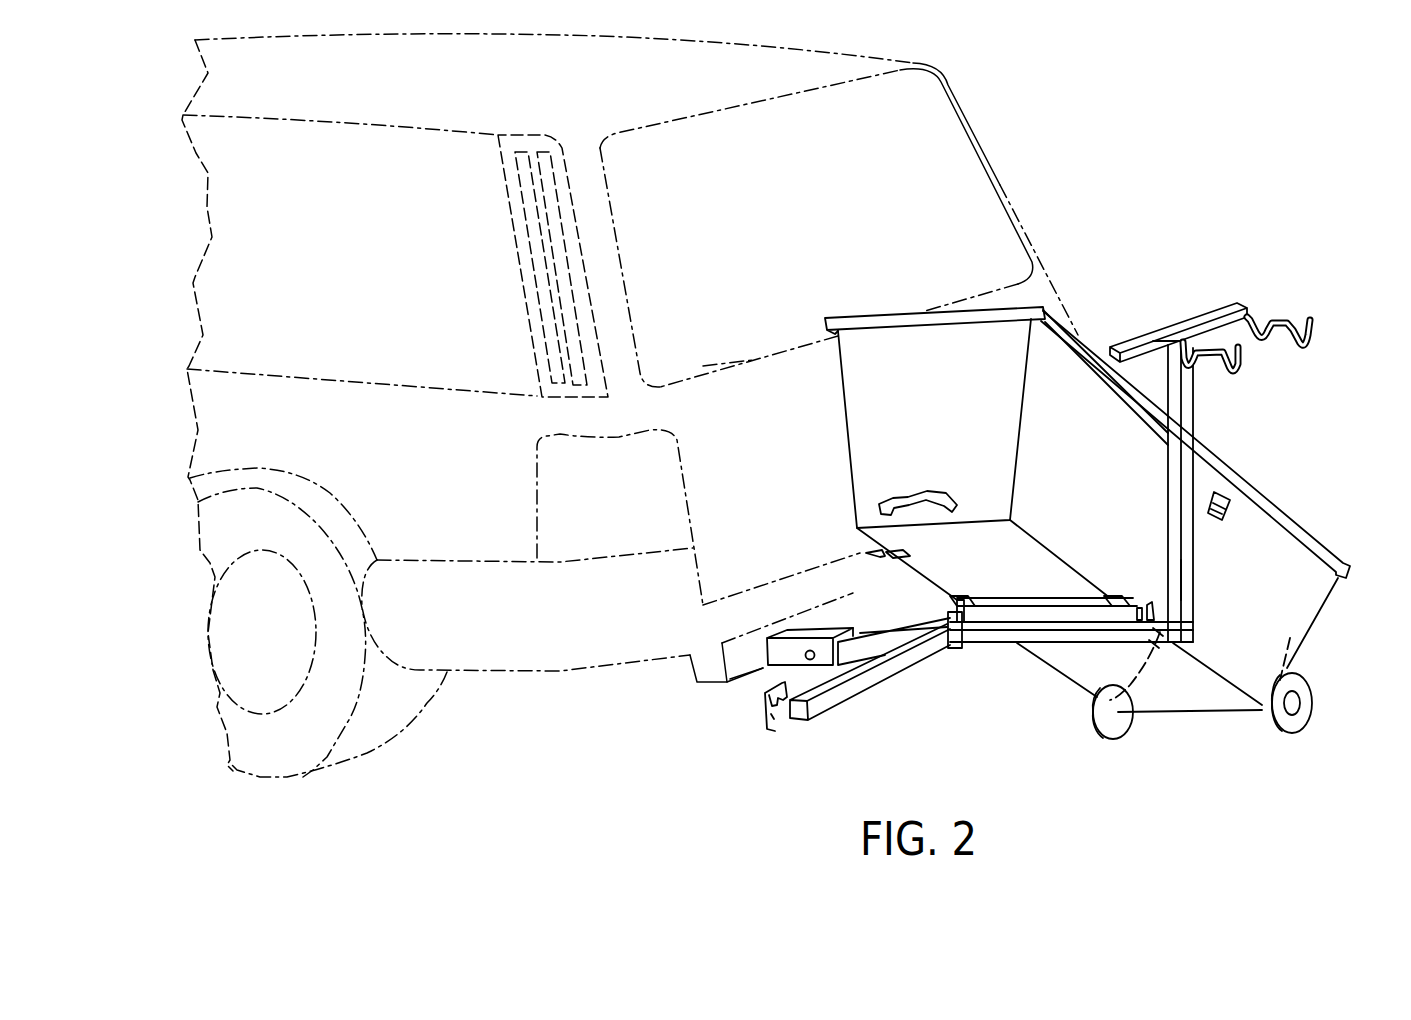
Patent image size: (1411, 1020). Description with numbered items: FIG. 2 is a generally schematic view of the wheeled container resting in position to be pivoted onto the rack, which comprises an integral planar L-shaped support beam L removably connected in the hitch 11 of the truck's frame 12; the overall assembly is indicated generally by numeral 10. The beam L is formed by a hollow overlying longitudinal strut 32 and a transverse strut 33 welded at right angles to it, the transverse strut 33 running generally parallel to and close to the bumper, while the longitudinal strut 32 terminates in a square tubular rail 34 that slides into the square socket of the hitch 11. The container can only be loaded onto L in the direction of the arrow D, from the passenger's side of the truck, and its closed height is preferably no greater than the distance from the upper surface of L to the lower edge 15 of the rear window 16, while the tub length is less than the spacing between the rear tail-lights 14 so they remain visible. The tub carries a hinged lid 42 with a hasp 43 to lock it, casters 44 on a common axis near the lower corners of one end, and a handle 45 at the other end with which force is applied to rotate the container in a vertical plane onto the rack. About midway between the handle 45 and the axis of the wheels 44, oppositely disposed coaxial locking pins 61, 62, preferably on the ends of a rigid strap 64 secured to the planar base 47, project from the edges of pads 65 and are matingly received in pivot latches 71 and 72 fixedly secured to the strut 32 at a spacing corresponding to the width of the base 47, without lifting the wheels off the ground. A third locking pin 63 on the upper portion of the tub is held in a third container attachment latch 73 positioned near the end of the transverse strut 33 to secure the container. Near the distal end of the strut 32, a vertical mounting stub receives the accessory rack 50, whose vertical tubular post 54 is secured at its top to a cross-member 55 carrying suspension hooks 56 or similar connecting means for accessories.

The hitch-mounted carrier 10 is at (1034, 155).
The hitch 11 is at (752, 680).
The frame 12 is at (705, 660).
The rear tail-light 14 is at (534, 489).
The lower edge 15 is at (753, 360).
The rear window 16 is at (797, 196).
The longitudinal strut 32 is at (1142, 653).
The transverse strut 33 is at (860, 695).
The rail 34 is at (860, 633).
The lid 42 is at (1313, 528).
The hasp 43 is at (1226, 511).
The casters 44 is at (1121, 721).
The handle 45 is at (912, 490).
The planar base 47 is at (1083, 681).
The accessory rack 50 is at (1160, 478).
The vertical tubular post 54 is at (1194, 560).
The cross-member 55 is at (1226, 313).
The suspension hooks 56 is at (1228, 362).
The locking pin 61 is at (1135, 602).
The locking pin 62 is at (953, 603).
The third locking pin 63 is at (866, 553).
The rigid strap 64 is at (1060, 622).
The pad 65 is at (895, 553).
The pivot latch 71 is at (1149, 600).
The pivot latch 72 is at (950, 643).
The third container attachment latch 73 is at (769, 728).
The arrow D is at (1208, 247).
The L-shaped support beam L is at (903, 682).